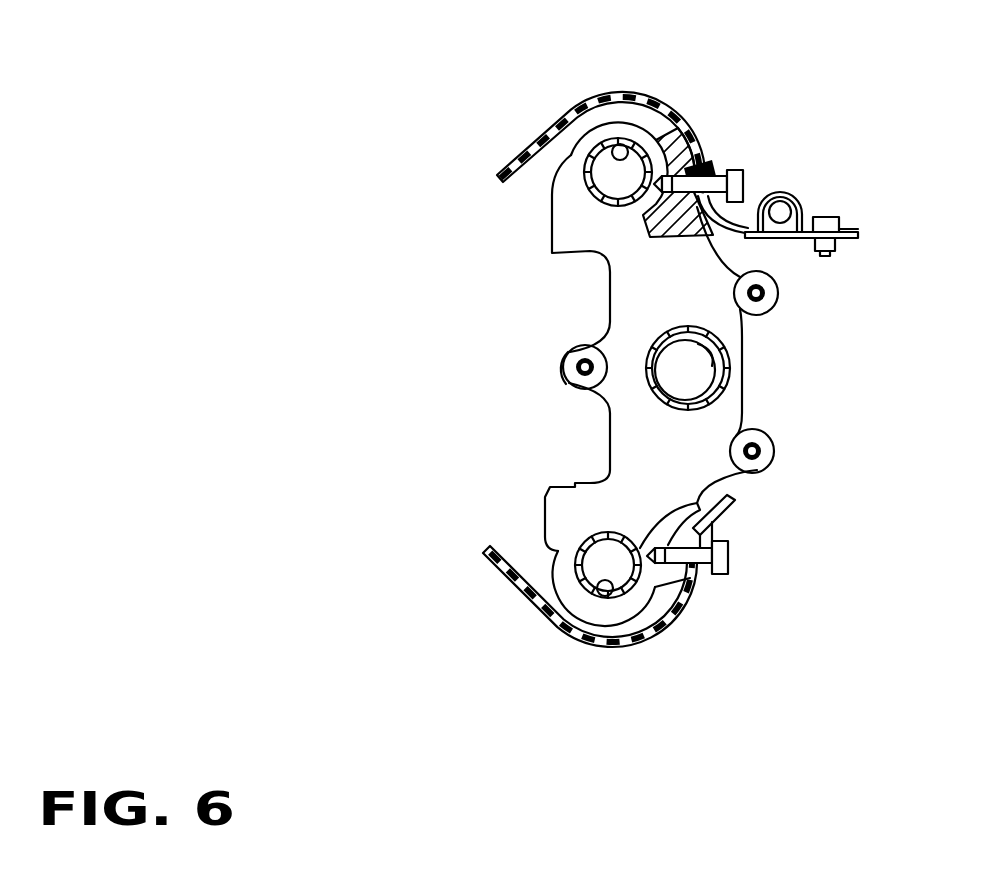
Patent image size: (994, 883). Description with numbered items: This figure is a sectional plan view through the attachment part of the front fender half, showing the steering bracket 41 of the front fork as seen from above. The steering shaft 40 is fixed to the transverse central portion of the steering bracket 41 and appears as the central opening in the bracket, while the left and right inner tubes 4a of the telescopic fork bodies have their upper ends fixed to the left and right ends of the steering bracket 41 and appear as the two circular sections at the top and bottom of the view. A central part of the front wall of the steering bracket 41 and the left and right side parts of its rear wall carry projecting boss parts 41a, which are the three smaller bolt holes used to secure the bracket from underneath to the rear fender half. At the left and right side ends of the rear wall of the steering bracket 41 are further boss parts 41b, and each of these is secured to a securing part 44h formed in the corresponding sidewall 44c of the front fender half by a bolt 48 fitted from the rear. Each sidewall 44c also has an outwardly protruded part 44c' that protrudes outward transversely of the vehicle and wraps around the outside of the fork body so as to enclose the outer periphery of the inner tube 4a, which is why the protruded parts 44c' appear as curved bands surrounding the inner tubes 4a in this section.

The inner tube 4a is at (628, 148).
The steering shaft 40 is at (700, 372).
The steering bracket 41 is at (548, 241).
The boss parts 41a is at (780, 294).
The boss parts 41b is at (695, 150).
The sidewalls 44c is at (560, 613).
The outwardly protruded parts 44c' is at (629, 370).
The securing parts 44h is at (712, 165).
The bolts 48 is at (750, 182).